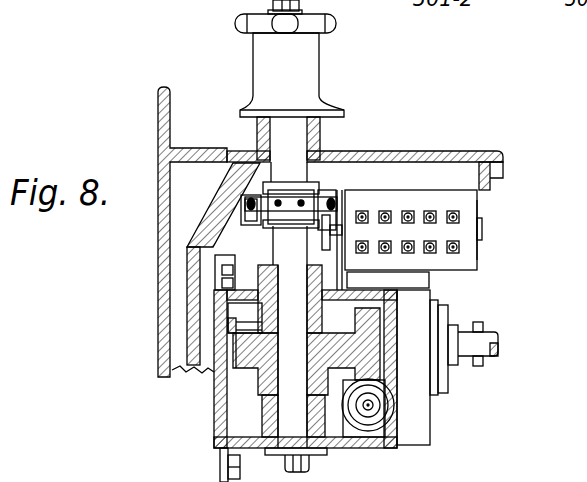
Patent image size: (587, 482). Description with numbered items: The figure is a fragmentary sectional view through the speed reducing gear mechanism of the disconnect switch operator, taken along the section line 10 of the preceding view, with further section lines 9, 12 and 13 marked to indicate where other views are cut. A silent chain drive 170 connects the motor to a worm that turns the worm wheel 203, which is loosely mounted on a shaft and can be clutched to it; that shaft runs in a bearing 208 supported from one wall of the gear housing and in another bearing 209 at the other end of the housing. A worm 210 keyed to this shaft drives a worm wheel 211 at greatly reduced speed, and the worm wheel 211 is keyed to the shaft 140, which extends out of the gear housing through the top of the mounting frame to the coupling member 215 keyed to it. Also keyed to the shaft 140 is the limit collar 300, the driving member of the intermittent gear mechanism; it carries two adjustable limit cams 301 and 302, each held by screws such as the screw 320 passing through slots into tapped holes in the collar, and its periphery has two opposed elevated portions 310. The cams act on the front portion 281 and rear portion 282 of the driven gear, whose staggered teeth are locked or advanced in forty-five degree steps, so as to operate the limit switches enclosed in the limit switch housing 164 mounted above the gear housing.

The coupling member 215 is at (300, 58).
The shaft 140 is at (297, 163).
The worm 210 is at (227, 333).
The limit collar 300 is at (297, 195).
The screw 320 is at (242, 200).
The limit cam 302 is at (243, 219).
The limit cam 301 is at (322, 202).
The front portion of gear 281 is at (352, 222).
The rear portion of gear 282 is at (348, 248).
The limit switch housing 164 is at (468, 253).
The bearing 209 is at (217, 360).
The worm wheel 211 is at (217, 355).
The bearing 208 is at (340, 326).
The worm wheel 203 is at (365, 343).
The section line 13- 13 is at (127, 224).
The section line 9- 9 is at (140, 302).
The section line 12- 12 is at (303, 148).
The section line 10 is at (383, 290).
The elevated portion 310 is at (471, 25).
The silent chain drive 170 is at (480, 475).